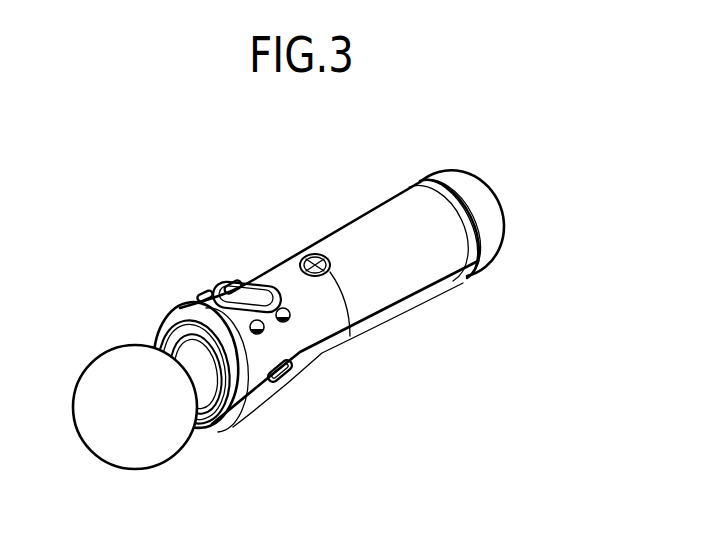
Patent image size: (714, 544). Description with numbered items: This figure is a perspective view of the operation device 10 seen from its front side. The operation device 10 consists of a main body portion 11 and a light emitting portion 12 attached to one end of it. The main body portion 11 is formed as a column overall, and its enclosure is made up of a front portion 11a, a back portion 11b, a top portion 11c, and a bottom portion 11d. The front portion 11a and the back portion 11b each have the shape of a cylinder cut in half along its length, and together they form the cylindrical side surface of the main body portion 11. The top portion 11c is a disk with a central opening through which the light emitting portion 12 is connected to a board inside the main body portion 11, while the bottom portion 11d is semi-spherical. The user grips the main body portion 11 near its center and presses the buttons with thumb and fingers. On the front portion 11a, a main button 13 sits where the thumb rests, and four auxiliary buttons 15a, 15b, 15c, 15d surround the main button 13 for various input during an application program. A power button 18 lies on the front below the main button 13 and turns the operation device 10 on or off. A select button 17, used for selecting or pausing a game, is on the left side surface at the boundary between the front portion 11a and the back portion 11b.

The operation device 10 is at (328, 332).
The main body portion 11 is at (356, 321).
The front portion 11a is at (369, 232).
The back portion 11b is at (398, 300).
The top portion 11c is at (201, 429).
The bottom portion 11d is at (490, 237).
The light emitting portion 12 is at (138, 460).
The main button 13 is at (224, 298).
The auxiliary button 15a is at (203, 296).
The auxiliary button 15b is at (254, 335).
The auxiliary button 15c is at (232, 282).
The auxiliary button 15d is at (290, 323).
The select button 17 is at (280, 382).
The power button 18 is at (313, 254).